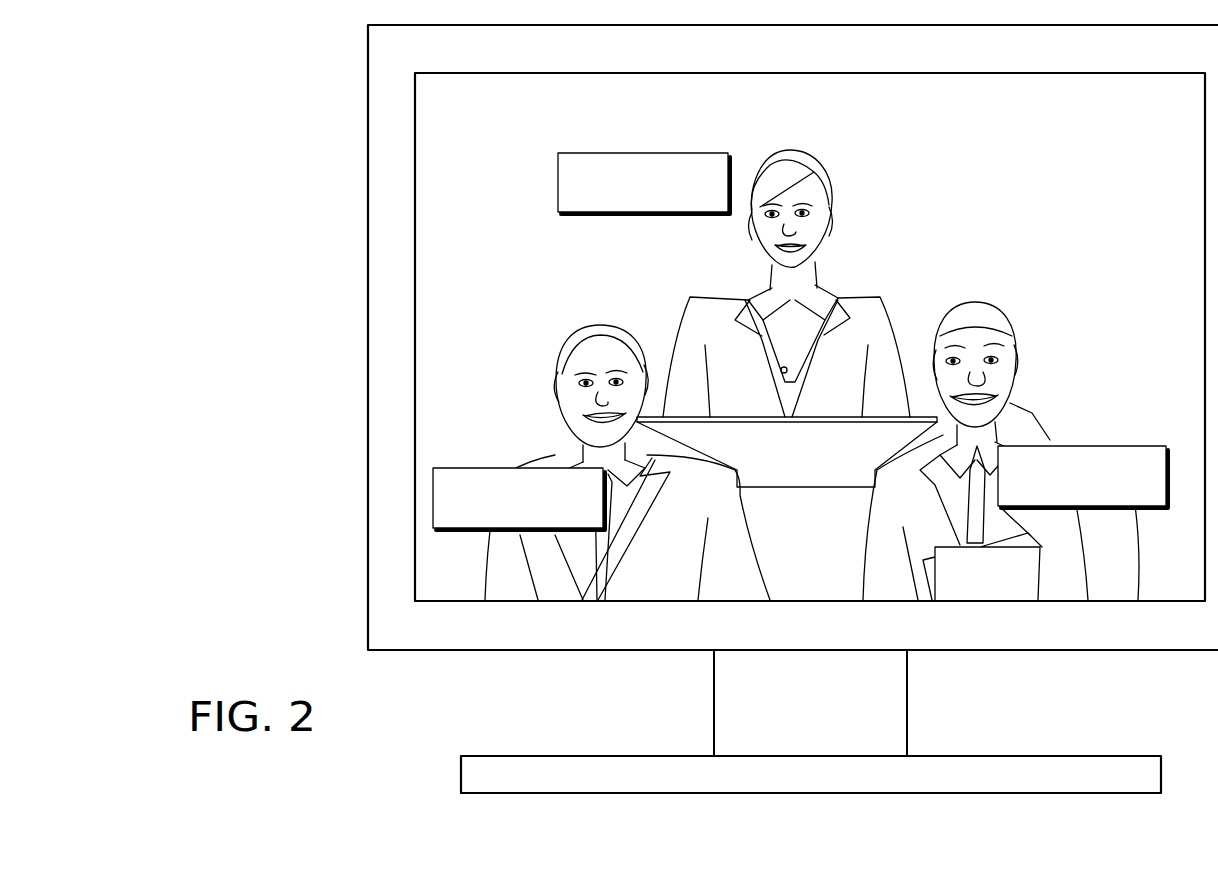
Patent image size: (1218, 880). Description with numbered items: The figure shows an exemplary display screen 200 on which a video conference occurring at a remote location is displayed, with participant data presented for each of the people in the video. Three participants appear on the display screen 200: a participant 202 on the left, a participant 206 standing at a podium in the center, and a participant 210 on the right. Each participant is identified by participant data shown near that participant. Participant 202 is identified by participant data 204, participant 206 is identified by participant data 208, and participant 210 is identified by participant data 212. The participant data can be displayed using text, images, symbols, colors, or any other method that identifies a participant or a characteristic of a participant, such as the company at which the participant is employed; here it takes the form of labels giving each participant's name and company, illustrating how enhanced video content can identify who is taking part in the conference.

The display screen 200 is at (232, 66).
The participant 202 is at (597, 320).
The participant data 204 is at (492, 467).
The participant 206 is at (823, 176).
The participant data 208 is at (643, 152).
The participant 210 is at (1032, 413).
The participant data 212 is at (1110, 443).